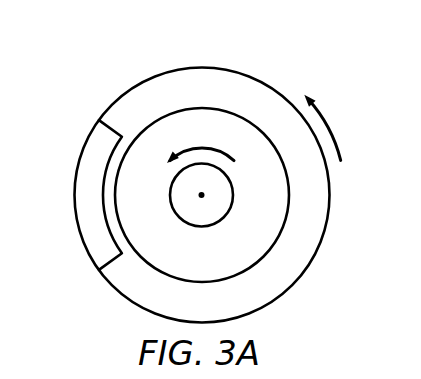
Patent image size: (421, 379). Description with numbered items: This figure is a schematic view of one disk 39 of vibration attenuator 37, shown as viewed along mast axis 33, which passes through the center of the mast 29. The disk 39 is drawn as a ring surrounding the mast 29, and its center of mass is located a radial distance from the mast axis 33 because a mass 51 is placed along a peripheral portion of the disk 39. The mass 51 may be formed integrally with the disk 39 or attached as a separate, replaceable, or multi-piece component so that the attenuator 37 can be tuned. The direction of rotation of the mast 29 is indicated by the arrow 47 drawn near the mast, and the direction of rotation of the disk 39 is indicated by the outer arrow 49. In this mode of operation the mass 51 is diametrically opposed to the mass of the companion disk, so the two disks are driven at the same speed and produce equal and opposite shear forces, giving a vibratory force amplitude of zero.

The vibration attenuator 37 is at (117, 64).
The disk 39 is at (241, 74).
The mass 51 is at (82, 194).
The arrow 47 is at (200, 150).
The arrow 49 is at (340, 134).
The mast 29 is at (203, 227).
The mast axis 33 is at (201, 195).